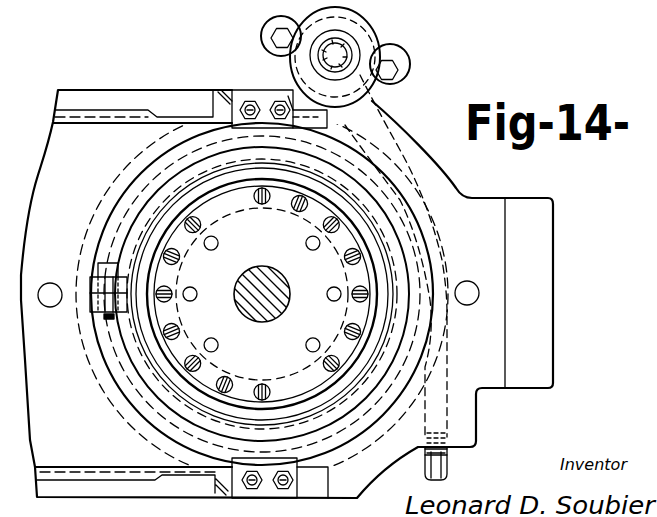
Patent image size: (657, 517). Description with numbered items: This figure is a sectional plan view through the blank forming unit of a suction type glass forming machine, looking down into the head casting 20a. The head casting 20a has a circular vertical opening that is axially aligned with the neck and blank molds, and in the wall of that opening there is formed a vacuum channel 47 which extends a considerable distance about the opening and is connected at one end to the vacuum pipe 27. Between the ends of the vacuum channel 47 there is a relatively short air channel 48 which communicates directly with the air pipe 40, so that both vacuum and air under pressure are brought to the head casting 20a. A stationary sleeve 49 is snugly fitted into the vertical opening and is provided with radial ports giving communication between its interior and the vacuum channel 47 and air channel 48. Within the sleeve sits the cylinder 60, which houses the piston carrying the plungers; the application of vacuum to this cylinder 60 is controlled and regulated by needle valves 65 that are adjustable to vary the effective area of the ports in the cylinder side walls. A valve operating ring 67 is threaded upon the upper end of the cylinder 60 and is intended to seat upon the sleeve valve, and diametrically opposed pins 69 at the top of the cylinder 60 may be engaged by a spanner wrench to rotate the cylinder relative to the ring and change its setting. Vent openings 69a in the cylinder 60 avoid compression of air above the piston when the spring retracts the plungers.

The vacuum pipe 27 is at (338, 56).
The stationary sleeve 49 is at (396, 200).
The valve operating ring 67 is at (398, 236).
The head casting 20a is at (540, 288).
The air channel 48 is at (440, 318).
The air pipe 40 is at (442, 465).
The vacuum channel 47 is at (352, 448).
The needle valves 65 is at (253, 197).
The cylinder 60 is at (274, 263).
The pins 69 is at (198, 291).
The vent openings 69a is at (218, 240).